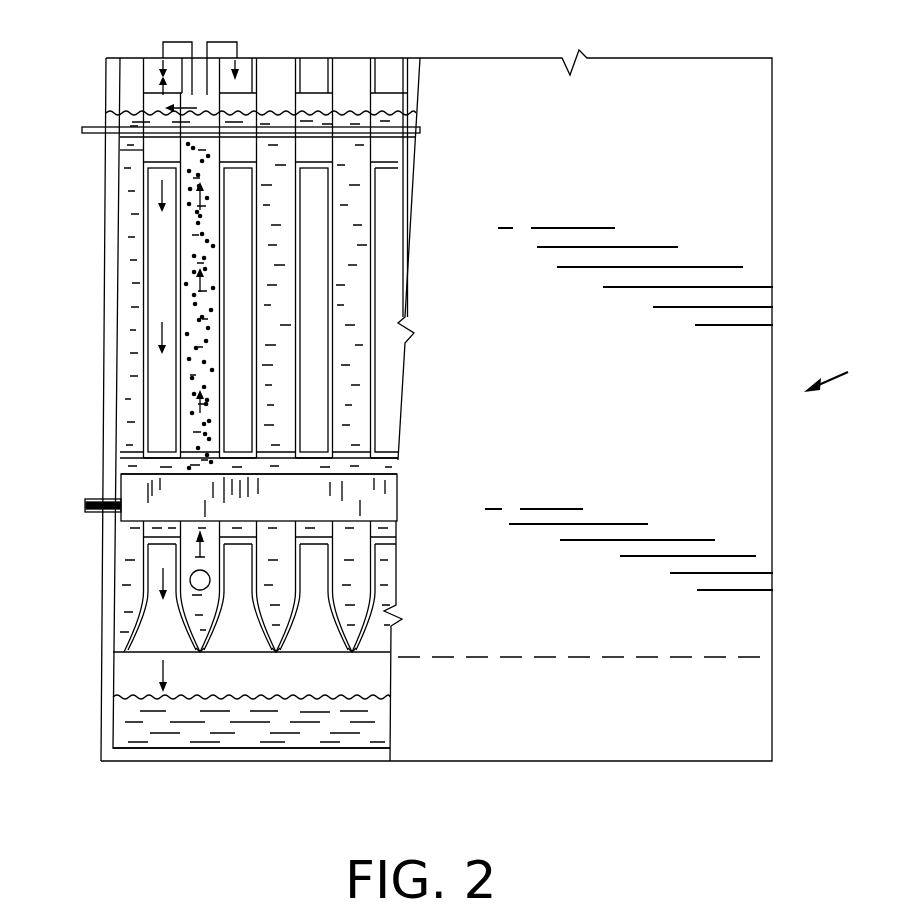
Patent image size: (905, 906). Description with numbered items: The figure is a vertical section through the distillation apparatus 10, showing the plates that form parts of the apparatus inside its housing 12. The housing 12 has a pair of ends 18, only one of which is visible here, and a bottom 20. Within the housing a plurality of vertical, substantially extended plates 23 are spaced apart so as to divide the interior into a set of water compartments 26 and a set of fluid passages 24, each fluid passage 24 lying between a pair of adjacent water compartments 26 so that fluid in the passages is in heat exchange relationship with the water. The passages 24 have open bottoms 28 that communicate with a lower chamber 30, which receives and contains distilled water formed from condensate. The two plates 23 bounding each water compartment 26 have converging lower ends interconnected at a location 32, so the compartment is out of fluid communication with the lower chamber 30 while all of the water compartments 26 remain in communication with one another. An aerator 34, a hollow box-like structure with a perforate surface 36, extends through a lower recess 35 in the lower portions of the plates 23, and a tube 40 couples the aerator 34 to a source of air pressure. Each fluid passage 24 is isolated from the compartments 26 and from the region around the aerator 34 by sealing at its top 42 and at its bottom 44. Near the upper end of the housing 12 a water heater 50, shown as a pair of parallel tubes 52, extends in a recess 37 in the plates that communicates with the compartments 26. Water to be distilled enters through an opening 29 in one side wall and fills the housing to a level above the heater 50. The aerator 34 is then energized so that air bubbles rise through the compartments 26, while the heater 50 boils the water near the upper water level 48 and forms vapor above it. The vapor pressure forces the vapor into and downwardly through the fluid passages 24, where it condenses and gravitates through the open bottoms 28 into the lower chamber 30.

The distillation apparatus 10 is at (846, 373).
The housing 12 is at (774, 478).
The end 18 is at (173, 238).
The bottom 20 is at (240, 761).
The plate 23 is at (145, 217).
The fluid passage 24 is at (152, 282).
The water compartment 26 is at (180, 372).
The open bottom 28 is at (155, 622).
The opening 29 is at (190, 580).
The lower chamber 30 is at (385, 692).
The location 32 is at (200, 652).
The aerator 34 is at (390, 500).
The lower recess 35 is at (143, 533).
The perforate surface 36 is at (393, 473).
The recess 37 is at (143, 150).
The tube 40 is at (94, 498).
The top 42 is at (392, 453).
The bottom 44 is at (394, 553).
The water level 48 is at (347, 112).
The water heater 50 is at (398, 140).
The tube 52 is at (288, 112).